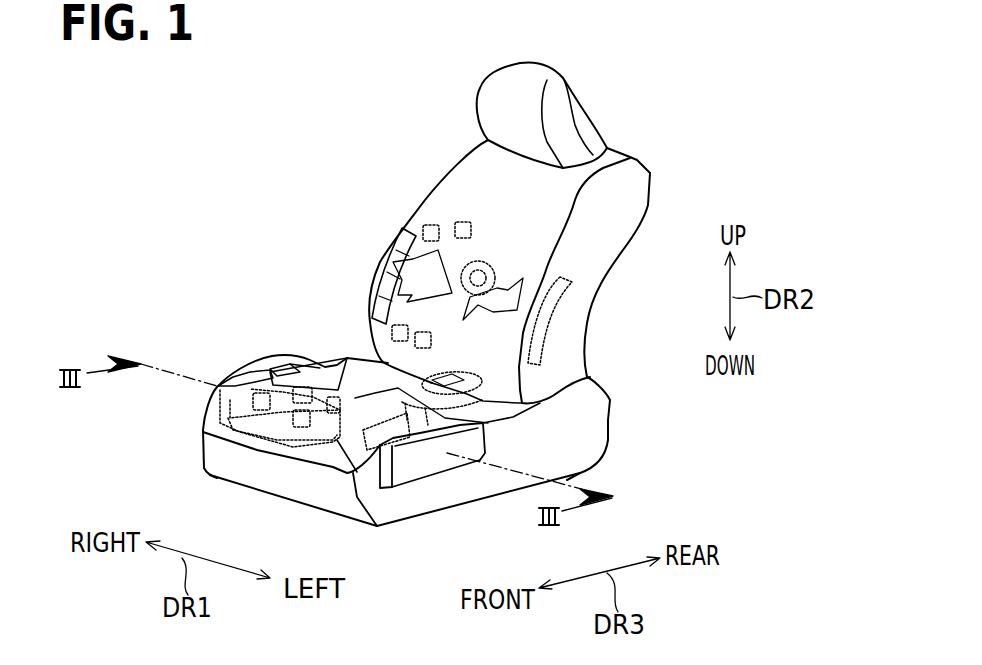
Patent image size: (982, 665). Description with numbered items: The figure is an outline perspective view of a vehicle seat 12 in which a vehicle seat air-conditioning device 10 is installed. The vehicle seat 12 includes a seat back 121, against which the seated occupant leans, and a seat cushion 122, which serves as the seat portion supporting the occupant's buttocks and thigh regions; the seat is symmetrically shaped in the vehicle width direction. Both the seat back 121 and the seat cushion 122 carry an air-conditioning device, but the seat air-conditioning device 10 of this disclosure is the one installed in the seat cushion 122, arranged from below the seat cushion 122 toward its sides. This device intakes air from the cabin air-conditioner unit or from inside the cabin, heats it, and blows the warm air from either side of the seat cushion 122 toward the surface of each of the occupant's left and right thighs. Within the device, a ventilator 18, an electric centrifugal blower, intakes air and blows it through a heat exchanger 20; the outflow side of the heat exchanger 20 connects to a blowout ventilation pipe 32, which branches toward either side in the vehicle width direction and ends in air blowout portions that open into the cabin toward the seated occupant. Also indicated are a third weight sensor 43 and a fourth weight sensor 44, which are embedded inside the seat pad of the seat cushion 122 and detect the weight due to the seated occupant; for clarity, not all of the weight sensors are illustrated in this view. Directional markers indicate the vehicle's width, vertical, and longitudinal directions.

The vehicle seat air-conditioning device 10 is at (450, 474).
The vehicle seat 12 is at (651, 158).
The seat back 121 is at (607, 250).
The seat cushion 122 is at (417, 503).
The ventilator 18 is at (490, 392).
The heat exchanger 20 is at (495, 426).
The blowout ventilation pipe 32 is at (267, 443).
The third weight sensor 43 is at (218, 415).
The fourth weight sensor 44 is at (238, 382).